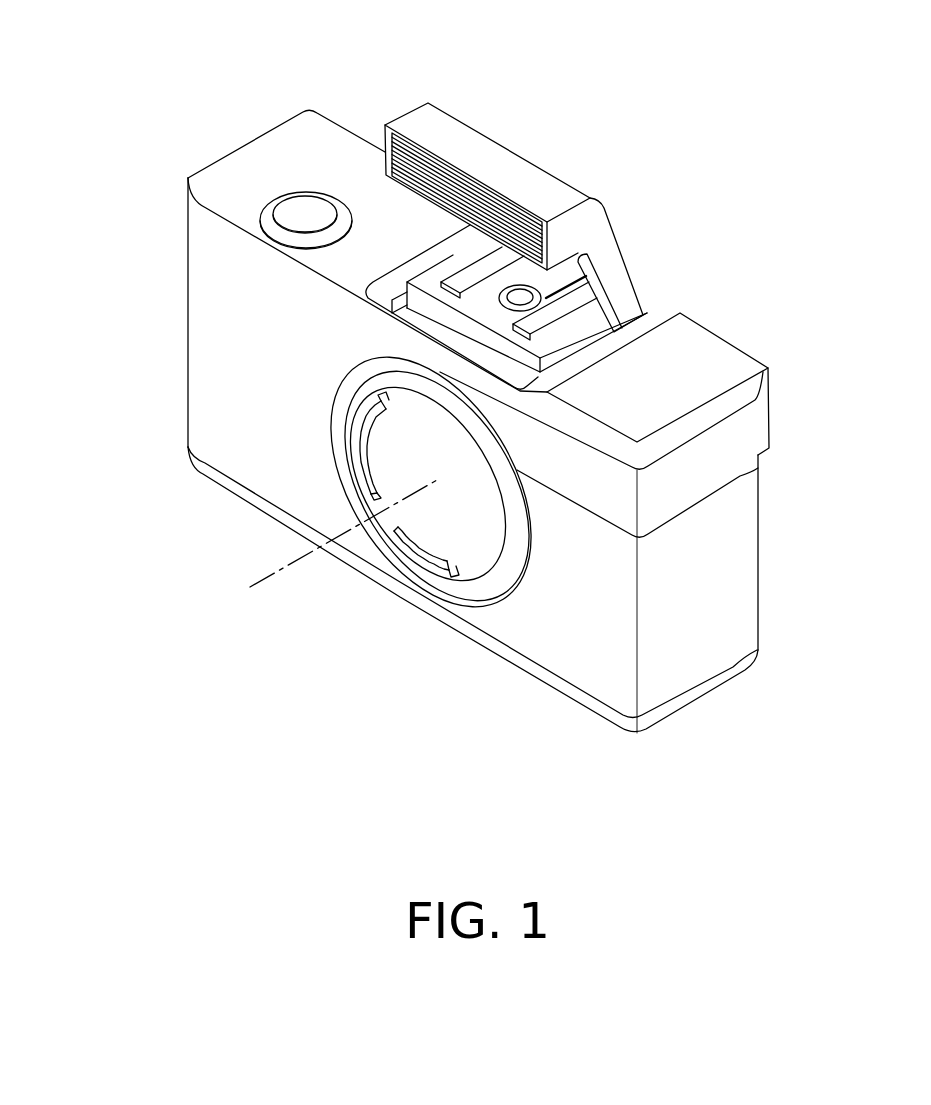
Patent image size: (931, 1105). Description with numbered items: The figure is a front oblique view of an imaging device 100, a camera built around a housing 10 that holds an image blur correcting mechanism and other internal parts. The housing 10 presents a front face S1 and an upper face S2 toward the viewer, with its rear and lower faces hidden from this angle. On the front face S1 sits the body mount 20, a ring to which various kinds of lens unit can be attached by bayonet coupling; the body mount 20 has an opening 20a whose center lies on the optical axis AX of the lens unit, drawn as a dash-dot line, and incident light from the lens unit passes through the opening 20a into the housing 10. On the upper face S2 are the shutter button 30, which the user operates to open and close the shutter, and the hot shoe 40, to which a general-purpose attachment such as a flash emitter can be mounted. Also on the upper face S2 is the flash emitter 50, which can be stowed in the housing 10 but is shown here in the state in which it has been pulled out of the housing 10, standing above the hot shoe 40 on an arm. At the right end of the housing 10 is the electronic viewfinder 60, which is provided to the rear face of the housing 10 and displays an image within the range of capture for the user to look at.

The imaging device 100 is at (568, 95).
The housing 10 is at (187, 234).
The body mount 20 is at (478, 597).
The opening 20a is at (458, 513).
The shutter button 30 is at (297, 208).
The hot shoe 40 is at (553, 288).
The flash emitter 50 is at (575, 223).
The electronic viewfinder 60 is at (700, 350).
The front face S1 is at (238, 348).
The upper face S2 is at (321, 155).
The optical axis AX is at (297, 562).